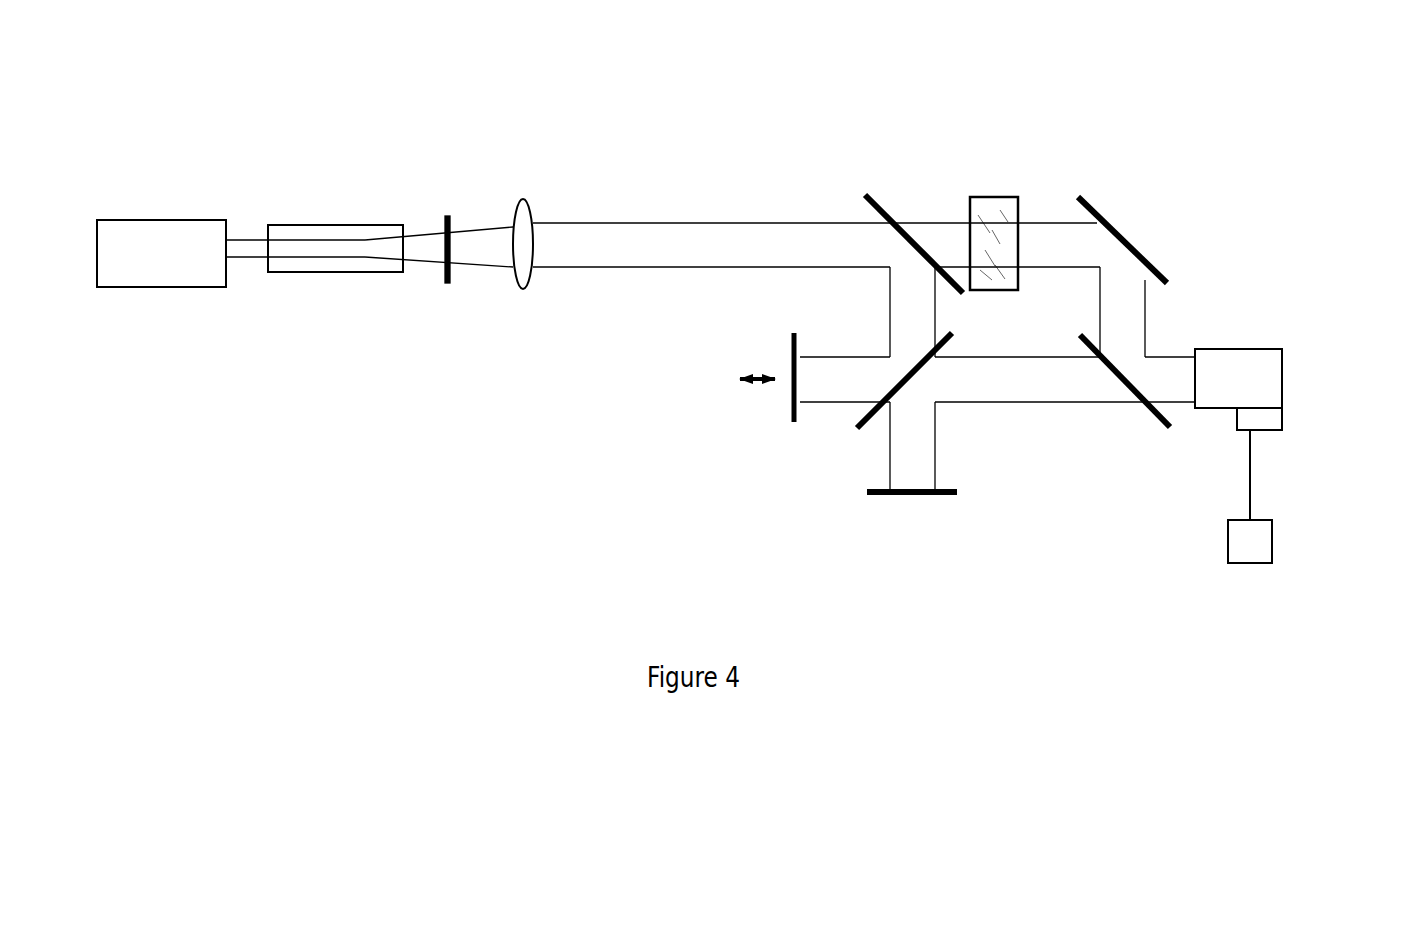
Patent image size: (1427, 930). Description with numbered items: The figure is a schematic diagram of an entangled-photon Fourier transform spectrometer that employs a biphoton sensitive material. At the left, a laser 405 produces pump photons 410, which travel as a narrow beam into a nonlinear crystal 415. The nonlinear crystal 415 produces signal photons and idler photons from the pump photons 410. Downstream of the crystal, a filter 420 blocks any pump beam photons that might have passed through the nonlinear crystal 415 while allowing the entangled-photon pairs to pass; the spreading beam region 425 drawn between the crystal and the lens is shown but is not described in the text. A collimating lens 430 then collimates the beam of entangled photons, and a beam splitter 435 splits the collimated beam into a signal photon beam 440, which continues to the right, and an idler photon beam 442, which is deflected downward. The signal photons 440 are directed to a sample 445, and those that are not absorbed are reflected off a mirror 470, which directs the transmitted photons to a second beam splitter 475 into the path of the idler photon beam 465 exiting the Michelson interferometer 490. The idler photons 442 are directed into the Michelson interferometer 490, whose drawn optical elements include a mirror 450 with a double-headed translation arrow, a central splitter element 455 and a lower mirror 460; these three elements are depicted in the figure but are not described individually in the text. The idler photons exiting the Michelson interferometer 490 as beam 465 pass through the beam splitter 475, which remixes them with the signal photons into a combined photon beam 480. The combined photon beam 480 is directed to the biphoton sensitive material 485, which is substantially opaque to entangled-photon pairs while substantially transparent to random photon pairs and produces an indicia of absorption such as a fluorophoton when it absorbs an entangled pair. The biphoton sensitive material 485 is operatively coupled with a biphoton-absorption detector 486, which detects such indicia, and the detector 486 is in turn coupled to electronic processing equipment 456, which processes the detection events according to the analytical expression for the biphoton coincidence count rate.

The laser 405 is at (124, 310).
The pump photons 410 is at (254, 243).
The nonlinear crystal 415 is at (353, 218).
The filter 420 is at (454, 197).
The diverging beam 425 is at (496, 268).
The collimating lens 430 is at (540, 200).
The beam splitter 435 is at (883, 195).
The signal photon beam 440 is at (940, 218).
The idler photon beam 442 is at (887, 323).
The sample 445 is at (1025, 195).
The movable mirror 450 is at (778, 348).
The beam splitter 455 is at (968, 327).
The electronic processing equipment 456 is at (1218, 553).
The mirror 460 is at (937, 503).
The idler photon beam 465 is at (1052, 415).
The mirror 470 is at (1127, 218).
The beam splitter 475 is at (1167, 440).
The combined photon beam 480 is at (1168, 348).
The biphoton sensitive material 485 is at (1297, 348).
The biphoton-absorption detector 486 is at (1275, 443).
The Michelson interferometer 490 is at (782, 488).